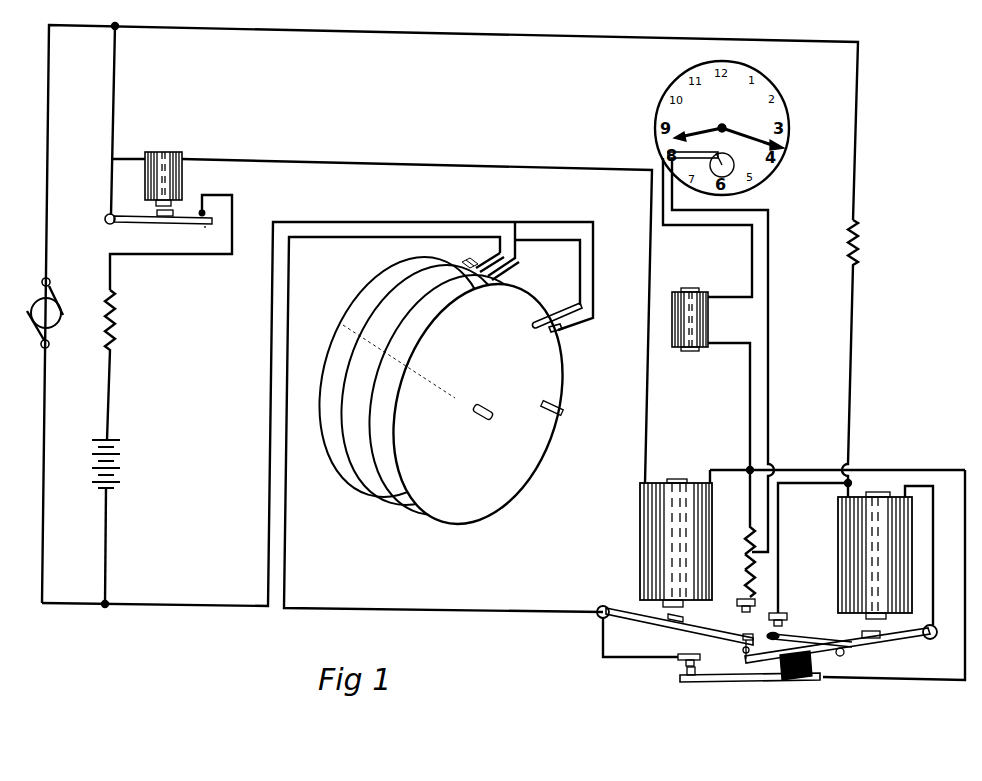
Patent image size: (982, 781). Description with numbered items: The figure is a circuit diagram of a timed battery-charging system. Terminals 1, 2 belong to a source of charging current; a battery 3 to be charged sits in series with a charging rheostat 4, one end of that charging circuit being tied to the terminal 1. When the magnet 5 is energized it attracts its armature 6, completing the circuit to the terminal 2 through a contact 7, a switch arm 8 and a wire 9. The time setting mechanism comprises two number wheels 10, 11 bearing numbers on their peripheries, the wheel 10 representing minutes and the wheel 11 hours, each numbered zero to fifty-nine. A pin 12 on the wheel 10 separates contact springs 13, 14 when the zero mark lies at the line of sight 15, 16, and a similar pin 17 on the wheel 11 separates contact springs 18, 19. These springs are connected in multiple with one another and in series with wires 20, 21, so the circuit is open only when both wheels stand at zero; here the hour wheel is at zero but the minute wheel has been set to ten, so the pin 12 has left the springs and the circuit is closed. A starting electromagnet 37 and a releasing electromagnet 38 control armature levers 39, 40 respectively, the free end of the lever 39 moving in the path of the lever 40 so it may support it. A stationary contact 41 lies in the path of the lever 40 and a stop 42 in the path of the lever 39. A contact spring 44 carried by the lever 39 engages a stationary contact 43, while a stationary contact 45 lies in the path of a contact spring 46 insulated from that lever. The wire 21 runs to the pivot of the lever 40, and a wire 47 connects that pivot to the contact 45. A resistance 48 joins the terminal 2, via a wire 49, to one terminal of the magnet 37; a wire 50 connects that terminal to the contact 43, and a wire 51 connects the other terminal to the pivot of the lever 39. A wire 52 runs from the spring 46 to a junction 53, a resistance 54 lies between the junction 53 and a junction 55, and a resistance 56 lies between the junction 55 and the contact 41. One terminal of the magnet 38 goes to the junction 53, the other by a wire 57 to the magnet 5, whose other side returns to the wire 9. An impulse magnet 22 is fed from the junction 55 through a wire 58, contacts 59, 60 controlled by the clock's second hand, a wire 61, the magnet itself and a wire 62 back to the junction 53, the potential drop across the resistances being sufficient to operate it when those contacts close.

The terminal 1 is at (100, 616).
The terminal 2 is at (114, 17).
The battery 3 is at (96, 522).
The charging rheostat 4 is at (98, 365).
The magnet 5 is at (166, 152).
The armature 6 is at (157, 223).
The contact 7 is at (171, 242).
The switch arm 8 is at (200, 236).
The wire 9 is at (104, 120).
The number wheel 10 is at (478, 404).
The number wheel 11 is at (450, 390).
The pin 12 is at (563, 413).
The contact spring 13 is at (548, 284).
The contact spring 14 is at (567, 334).
The line of sight 15 is at (413, 375).
The line of sight 16 is at (418, 372).
The pin 17 is at (464, 279).
The contact spring 18 is at (486, 257).
The contact spring 19 is at (503, 251).
The wire 20 is at (317, 415).
The wire 21 is at (443, 425).
The impulse magnet 22 is at (702, 319).
The starting electromagnet 37 is at (865, 555).
The releasing electromagnet 38 is at (663, 538).
The armature lever 39 is at (858, 646).
The armature lever 40 is at (679, 627).
The stationary contact 41 is at (742, 608).
The stop 42 is at (848, 662).
The stationary contact 43 is at (782, 614).
The contact spring 44 is at (782, 634).
The stationary contact 45 is at (673, 666).
The contact spring 46 is at (741, 687).
The wire 47 is at (637, 642).
The resistance 48 is at (865, 358).
The wire 49 is at (450, 308).
The wire 50 is at (815, 547).
The wire 51 is at (928, 555).
The wire 52 is at (902, 575).
The junction 53 is at (837, 462).
The resistance 54 is at (738, 512).
The junction 55 is at (738, 558).
The resistance 56 is at (737, 583).
The wire 57 is at (417, 315).
The wire 58 is at (733, 355).
The contact 59 is at (704, 160).
The contact 60 is at (693, 148).
The wire 61 is at (707, 227).
The wire 62 is at (729, 406).